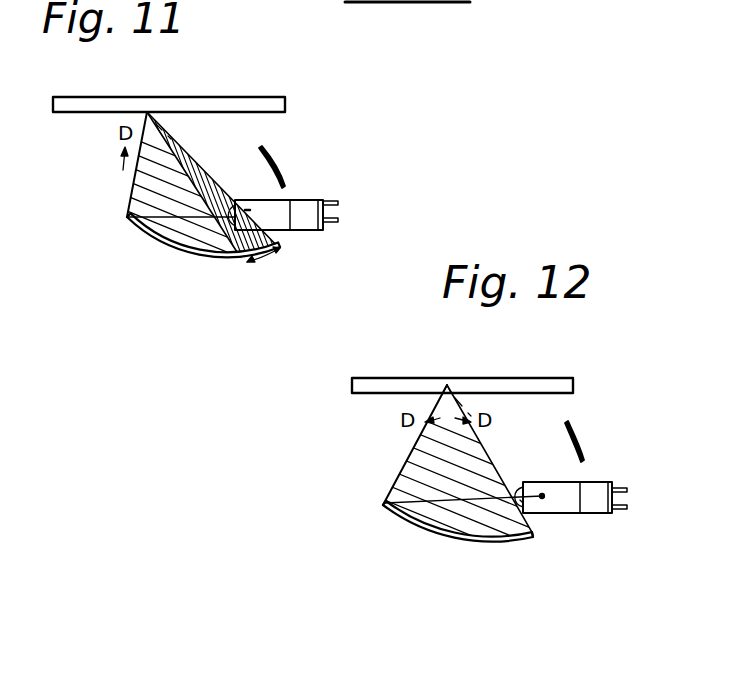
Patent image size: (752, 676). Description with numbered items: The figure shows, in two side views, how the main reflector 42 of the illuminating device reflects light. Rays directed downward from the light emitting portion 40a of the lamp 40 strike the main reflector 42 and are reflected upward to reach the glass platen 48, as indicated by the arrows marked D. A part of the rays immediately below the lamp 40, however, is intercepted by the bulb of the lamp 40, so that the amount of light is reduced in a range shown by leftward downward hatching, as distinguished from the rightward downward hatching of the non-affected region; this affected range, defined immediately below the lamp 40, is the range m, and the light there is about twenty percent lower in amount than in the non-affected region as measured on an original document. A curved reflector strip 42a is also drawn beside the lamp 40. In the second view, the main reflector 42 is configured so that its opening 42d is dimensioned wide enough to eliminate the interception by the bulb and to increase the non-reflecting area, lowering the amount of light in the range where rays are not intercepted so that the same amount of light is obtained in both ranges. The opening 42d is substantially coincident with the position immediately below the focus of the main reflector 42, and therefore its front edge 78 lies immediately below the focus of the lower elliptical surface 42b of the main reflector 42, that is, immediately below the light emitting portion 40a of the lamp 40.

In FIG. 11, the glass platen 48 is at (247, 100).
In FIG. 12, the glass platen 48 is at (557, 385).
In FIG. 11, the main reflector 42 is at (137, 238).
In FIG. 12, the main reflector 42 is at (434, 531).
In FIG. 11, the curved reflector strip 42a is at (277, 163).
In FIG. 12, the curved reflector strip 42a is at (576, 434).
In FIG. 11, the lower elliptical surface 42b is at (197, 252).
In FIG. 12, the lower elliptical surface 42b is at (460, 541).
In FIG. 12, the opening 42d is at (551, 522).
In FIG. 11, the lamp 40 is at (290, 223).
In FIG. 12, the lamp 40 is at (574, 481).
In FIG. 11, the light emitting portion 40a is at (247, 210).
In FIG. 12, the light emitting portion 40a is at (542, 498).
In FIG. 12, the front edge 78 is at (530, 540).
In FIG. 11, the range m is at (258, 263).